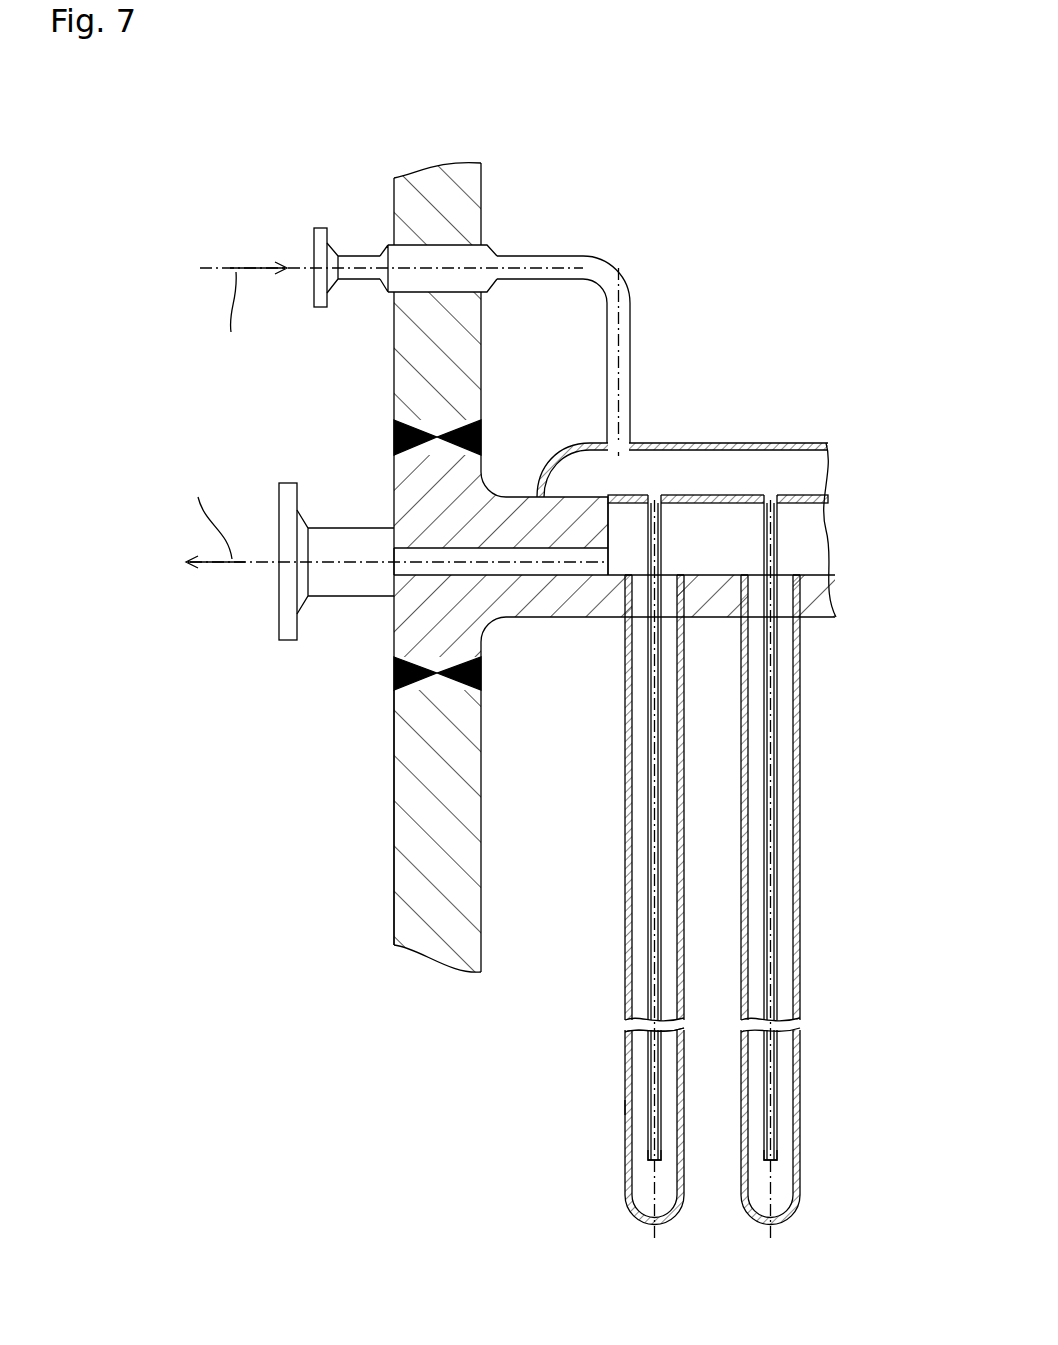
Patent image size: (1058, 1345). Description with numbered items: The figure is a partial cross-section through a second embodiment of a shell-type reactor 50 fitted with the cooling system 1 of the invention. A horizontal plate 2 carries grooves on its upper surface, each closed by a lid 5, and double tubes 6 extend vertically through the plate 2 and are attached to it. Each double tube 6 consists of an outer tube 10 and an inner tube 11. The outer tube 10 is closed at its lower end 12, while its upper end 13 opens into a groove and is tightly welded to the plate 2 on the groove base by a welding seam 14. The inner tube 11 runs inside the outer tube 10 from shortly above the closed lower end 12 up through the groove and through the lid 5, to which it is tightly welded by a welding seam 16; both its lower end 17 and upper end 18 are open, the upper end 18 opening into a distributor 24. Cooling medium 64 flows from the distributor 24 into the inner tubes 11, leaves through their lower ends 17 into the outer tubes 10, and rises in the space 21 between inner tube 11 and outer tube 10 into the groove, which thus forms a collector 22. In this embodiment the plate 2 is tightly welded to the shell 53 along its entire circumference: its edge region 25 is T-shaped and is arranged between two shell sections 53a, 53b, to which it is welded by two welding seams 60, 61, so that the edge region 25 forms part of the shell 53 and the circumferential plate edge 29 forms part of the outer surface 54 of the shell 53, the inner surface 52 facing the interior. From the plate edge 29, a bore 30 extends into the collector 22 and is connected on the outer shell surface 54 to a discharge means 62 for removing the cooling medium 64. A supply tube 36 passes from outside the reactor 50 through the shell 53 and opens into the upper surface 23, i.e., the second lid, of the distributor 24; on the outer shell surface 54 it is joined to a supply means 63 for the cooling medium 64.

The cooling system 1 is at (842, 278).
The horizontal plate 2 is at (835, 598).
The lid 5 is at (815, 495).
The double tube 6 is at (612, 1113).
The outer tube 10 is at (625, 1133).
The inner tube 11 is at (650, 1160).
The lower end of outer tube 12 is at (790, 1218).
The upper end of outer tube 13 is at (800, 600).
The welding seam 14 is at (678, 575).
The welding seam 16 is at (660, 495).
The lower end of inner tube 17 is at (777, 1163).
The upper end of inner tube 18 is at (768, 495).
The space between inner tube and outer tube 21 is at (640, 1047).
The collector 22 is at (815, 543).
The upper surface of distributor (second lid) 23 is at (818, 440).
The distributor 24 is at (815, 468).
The edge region of plate 25 is at (393, 632).
The circumferential plate edge 29 is at (393, 515).
The bore 30 is at (550, 577).
The supply tube 36 is at (634, 298).
The shell-type reactor 50 is at (486, 158).
The inner surface of shell 52 is at (484, 900).
The shell 53 is at (382, 866).
The shell section 53a is at (408, 820).
The shell section 53b is at (393, 343).
The outer surface of shell 54 is at (395, 772).
The welding seam 60 is at (400, 683).
The welding seam 61 is at (393, 437).
The discharge means 62 is at (268, 634).
The supply means 63 is at (297, 244).
The cooling medium 64 is at (236, 415).